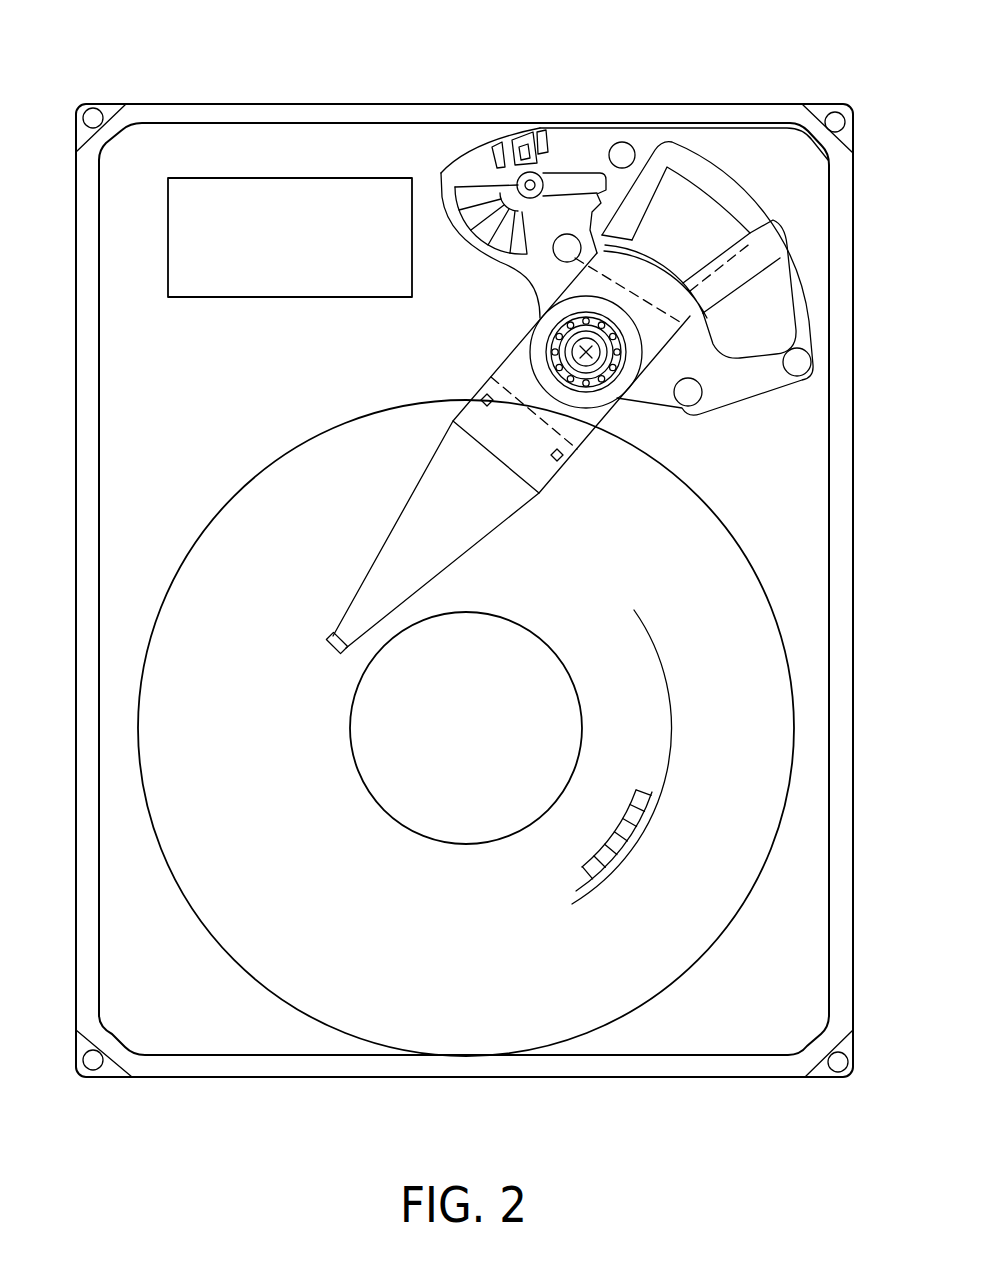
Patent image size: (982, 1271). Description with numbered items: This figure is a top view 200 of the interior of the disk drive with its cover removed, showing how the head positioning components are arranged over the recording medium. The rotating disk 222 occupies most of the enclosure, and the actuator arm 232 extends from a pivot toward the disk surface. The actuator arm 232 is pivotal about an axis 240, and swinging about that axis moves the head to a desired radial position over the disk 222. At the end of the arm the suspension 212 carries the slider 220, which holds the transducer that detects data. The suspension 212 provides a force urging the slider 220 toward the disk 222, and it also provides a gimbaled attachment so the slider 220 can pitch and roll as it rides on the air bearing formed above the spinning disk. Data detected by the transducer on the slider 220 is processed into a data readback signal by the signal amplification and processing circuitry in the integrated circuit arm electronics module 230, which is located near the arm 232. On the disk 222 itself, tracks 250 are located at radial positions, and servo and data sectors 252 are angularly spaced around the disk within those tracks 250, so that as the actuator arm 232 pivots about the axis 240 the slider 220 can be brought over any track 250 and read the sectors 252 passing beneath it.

The top view 200 is at (788, 82).
The suspension 212 is at (527, 500).
The slider 220 is at (333, 651).
The disk 222 is at (756, 787).
The arm electronics module 230 is at (292, 250).
The actuator arm 232 is at (477, 418).
The axis 240 is at (552, 348).
The tracks 250 is at (597, 893).
The servo and data sectors 252 is at (606, 844).